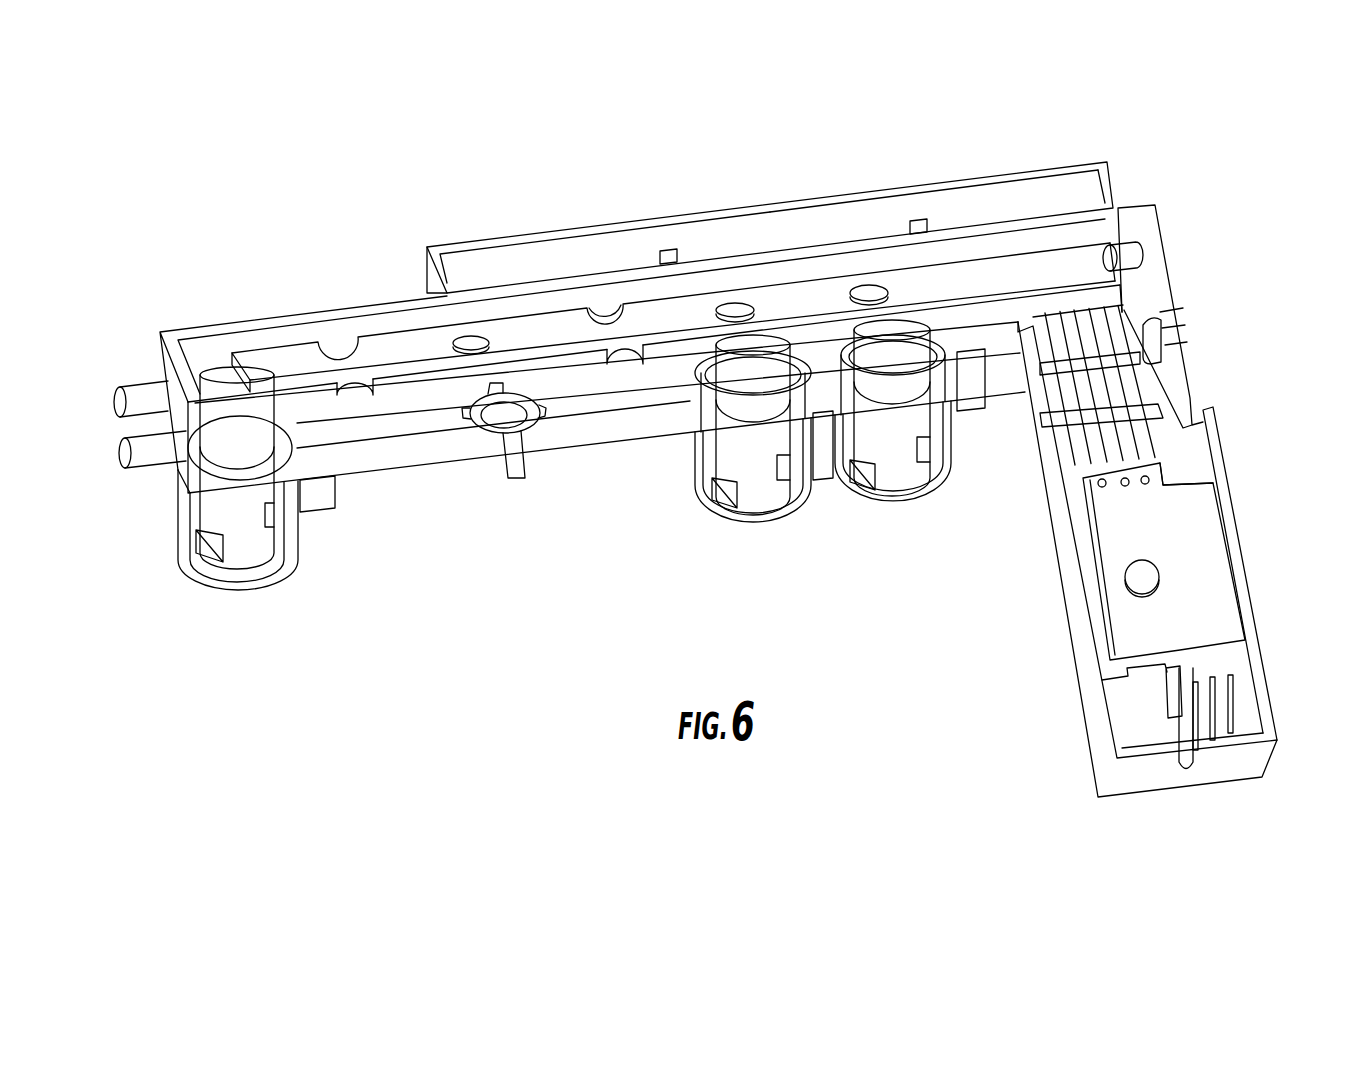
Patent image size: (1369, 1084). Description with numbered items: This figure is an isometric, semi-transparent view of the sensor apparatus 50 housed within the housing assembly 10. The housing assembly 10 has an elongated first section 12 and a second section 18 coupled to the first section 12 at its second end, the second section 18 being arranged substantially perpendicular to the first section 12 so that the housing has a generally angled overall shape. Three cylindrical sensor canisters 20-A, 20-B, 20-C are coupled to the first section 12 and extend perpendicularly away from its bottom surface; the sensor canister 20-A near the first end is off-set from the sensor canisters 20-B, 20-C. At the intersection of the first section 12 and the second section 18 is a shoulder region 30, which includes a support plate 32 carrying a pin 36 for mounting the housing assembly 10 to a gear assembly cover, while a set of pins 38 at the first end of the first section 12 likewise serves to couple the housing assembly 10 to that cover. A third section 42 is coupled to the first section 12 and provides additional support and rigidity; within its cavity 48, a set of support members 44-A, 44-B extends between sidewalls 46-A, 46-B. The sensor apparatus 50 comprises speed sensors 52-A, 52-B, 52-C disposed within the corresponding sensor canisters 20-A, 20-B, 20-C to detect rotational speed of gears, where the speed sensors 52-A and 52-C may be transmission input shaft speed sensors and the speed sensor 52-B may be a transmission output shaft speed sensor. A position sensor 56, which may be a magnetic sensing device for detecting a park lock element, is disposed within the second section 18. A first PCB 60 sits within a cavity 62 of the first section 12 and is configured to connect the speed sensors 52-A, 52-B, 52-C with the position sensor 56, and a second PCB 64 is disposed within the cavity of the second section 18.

The housing assembly 10 is at (142, 334).
The first section 12 is at (470, 480).
The second section 18 is at (1300, 632).
The sensor canister 20-A is at (265, 590).
The sensor canister 20-B is at (764, 524).
The sensor canister 20-C is at (890, 510).
The shoulder region 30 is at (1208, 314).
The support plate 32 is at (1172, 262).
The pin 36 is at (1125, 243).
The set of pins 38 is at (102, 437).
The third section 42 is at (747, 192).
The support member 44-A is at (667, 250).
The support member 44-B is at (920, 218).
The sidewall 46-A is at (505, 233).
The sidewall 46-B is at (810, 238).
The cavity 48 is at (962, 218).
The sensor apparatus 50 is at (357, 190).
The speed sensor 52-A is at (205, 514).
The speed sensor 52-B is at (722, 452).
The speed sensor 52-C is at (918, 447).
The position sensor 56 is at (1206, 556).
The first PCB 60 is at (385, 342).
The cavity 62 is at (607, 303).
The second PCB 64 is at (1193, 492).